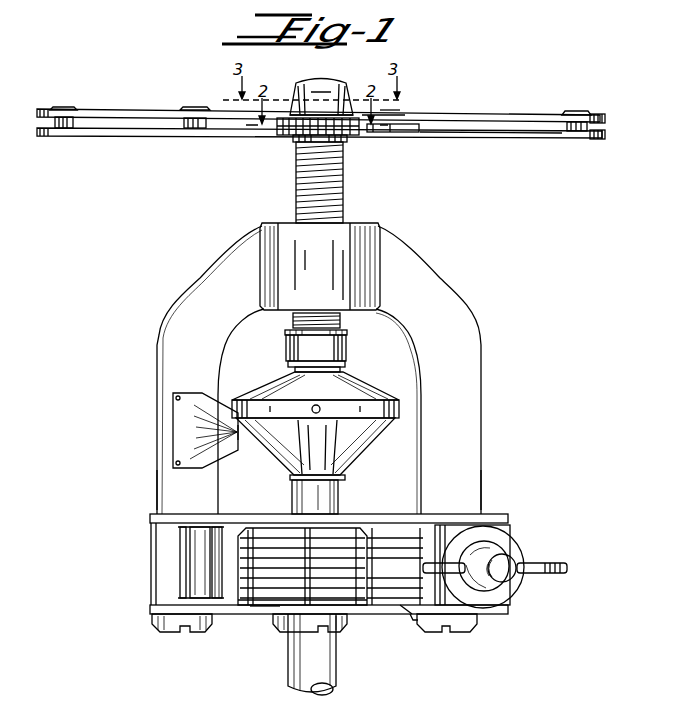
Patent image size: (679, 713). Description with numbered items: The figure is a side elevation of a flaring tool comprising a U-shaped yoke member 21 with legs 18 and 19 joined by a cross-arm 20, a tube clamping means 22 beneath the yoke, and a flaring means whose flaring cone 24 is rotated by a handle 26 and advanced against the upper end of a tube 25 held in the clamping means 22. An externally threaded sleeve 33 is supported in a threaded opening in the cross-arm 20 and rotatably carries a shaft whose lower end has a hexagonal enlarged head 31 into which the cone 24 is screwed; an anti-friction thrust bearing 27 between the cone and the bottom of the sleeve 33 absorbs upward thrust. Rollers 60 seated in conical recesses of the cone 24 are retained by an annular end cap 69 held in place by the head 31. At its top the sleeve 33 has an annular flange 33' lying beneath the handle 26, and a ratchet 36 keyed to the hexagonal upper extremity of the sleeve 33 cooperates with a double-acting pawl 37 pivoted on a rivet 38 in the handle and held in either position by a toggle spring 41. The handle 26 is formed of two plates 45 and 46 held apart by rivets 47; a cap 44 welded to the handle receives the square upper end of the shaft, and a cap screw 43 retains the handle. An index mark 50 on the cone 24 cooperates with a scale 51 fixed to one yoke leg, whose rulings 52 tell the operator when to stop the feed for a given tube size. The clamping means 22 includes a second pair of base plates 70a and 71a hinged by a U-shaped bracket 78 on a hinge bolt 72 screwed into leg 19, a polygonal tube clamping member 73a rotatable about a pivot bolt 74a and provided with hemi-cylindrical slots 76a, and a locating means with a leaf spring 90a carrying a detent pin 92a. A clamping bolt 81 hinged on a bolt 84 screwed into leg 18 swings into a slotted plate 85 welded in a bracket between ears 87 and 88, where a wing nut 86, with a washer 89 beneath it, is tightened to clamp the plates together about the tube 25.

The leg of the yoke 18 is at (476, 481).
The leg of the yoke 19 is at (180, 490).
The cross-arm 20 is at (355, 232).
The yoke member 21 is at (448, 290).
The tube clamping means 22 is at (558, 557).
The flaring cone 24 is at (366, 446).
The tube 25 is at (303, 495).
The handle 26 is at (470, 115).
The anti-friction thrust bearing 27 is at (290, 320).
The enlarged head 31 is at (305, 345).
The externally threaded sleeve 33 is at (335, 182).
The annular flange 33' is at (299, 154).
The ratchet 36 is at (280, 133).
The double-acting pawl 37 is at (418, 128).
The rivet 38 is at (396, 112).
The toggle spring 41 is at (508, 130).
The cap screw 43 is at (313, 79).
The cap 44 is at (330, 96).
The plate 45 is at (606, 118).
The plate 46 is at (606, 135).
The rivets 47 is at (60, 108).
The index mark 50 is at (398, 411).
The scale 51 is at (178, 426).
The rulings 52 is at (240, 443).
The roller 60 is at (320, 460).
The annular end cap 69 is at (360, 380).
The base plate 70a is at (405, 522).
The base plate 71a is at (262, 612).
The hinge bolt 72 is at (168, 626).
The polygonal tube clamping member 73a is at (330, 596).
The pivot bolt 74a is at (340, 608).
The hemi-cylindrical slots 76a is at (275, 598).
The U-shaped bracket 78 is at (170, 559).
The clamping bolt 81 is at (510, 565).
The bolt 84 is at (465, 630).
The slotted plate 85 is at (510, 536).
The wing nut 86 is at (568, 568).
The ear 87 is at (508, 521).
The ear 88 is at (508, 610).
The washer 89 is at (522, 580).
The leaf spring 90a is at (405, 614).
The detent pin 92a is at (418, 620).